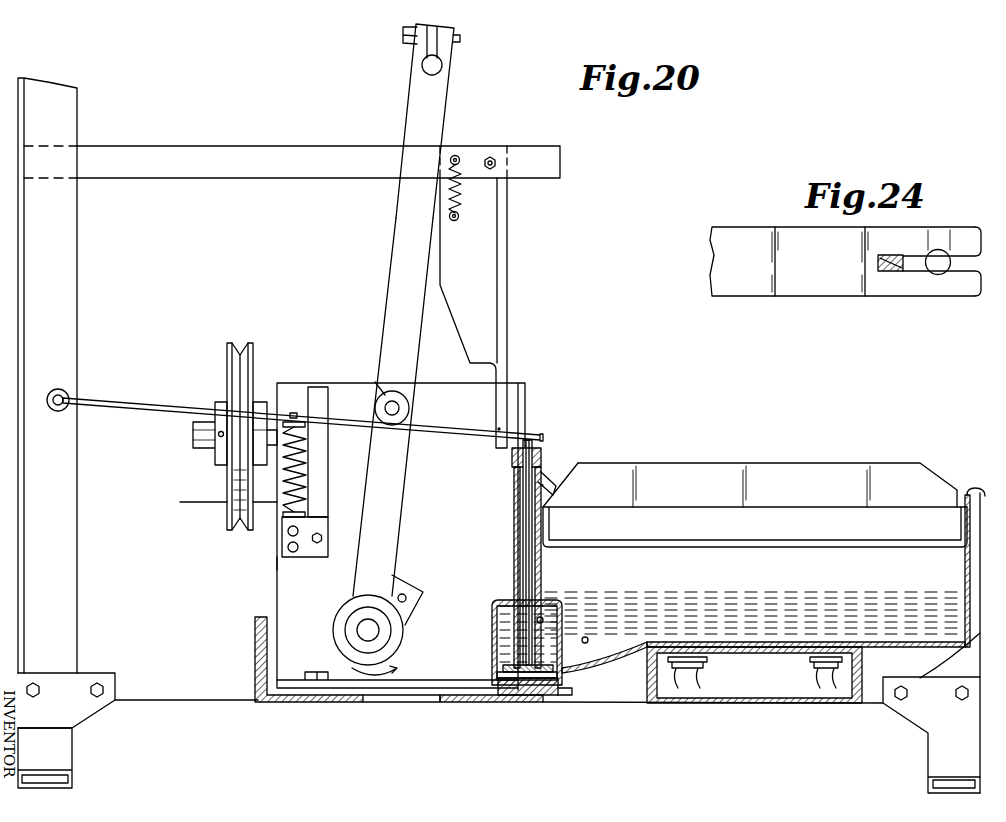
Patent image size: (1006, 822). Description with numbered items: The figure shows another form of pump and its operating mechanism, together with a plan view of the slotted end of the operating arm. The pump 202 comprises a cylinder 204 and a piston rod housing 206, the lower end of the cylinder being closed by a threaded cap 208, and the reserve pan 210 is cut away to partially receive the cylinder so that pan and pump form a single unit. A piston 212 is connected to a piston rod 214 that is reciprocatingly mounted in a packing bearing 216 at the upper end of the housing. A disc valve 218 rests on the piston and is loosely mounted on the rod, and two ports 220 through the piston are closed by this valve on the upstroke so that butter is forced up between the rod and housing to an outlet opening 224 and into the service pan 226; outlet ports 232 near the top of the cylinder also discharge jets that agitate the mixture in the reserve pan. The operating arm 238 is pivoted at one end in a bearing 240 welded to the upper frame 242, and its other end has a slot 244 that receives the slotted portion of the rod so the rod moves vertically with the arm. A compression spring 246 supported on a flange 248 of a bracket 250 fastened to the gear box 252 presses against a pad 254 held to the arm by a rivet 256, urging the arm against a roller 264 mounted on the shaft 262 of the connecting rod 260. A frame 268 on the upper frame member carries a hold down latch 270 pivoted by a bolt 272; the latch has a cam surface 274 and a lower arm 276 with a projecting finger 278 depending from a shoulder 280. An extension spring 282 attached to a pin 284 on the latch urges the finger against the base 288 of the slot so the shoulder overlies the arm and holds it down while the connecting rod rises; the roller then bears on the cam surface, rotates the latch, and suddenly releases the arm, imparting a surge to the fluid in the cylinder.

In FIG. 20, the pump 202 is at (503, 591).
In FIG. 20, the cylinder 204 is at (492, 612).
In FIG. 20, the piston rod housing 206 is at (514, 532).
In FIG. 20, the cap 208 is at (553, 690).
In FIG. 20, the reserve pan 210 is at (912, 645).
In FIG. 20, the piston 212 is at (567, 673).
In FIG. 20, the piston rod 214 is at (536, 434).
In FIG. 24, the piston rod 214 is at (936, 274).
In FIG. 20, the packing bearing 216 is at (547, 458).
In FIG. 20, the disc valve 218 is at (520, 667).
In FIG. 20, the ports 220 is at (497, 674).
In FIG. 20, the outlet opening 224 is at (556, 490).
In FIG. 20, the service pan 226 is at (940, 556).
In FIG. 20, the outlet ports 232 is at (545, 616).
In FIG. 20, the operating arm 238 is at (165, 413).
In FIG. 24, the operating arm 238 is at (752, 290).
In FIG. 20, the bearing 240 is at (57, 388).
In FIG. 20, the upper frame 242 is at (76, 318).
In FIG. 24, the slot 244 is at (890, 258).
In FIG. 20, the compression spring 246 is at (305, 490).
In FIG. 20, the flange 248 is at (312, 523).
In FIG. 20, the bracket 250 is at (323, 476).
In FIG. 20, the gear box 252 is at (278, 565).
In FIG. 20, the pad 254 is at (310, 430).
In FIG. 20, the rivet 256 is at (292, 412).
In FIG. 20, the connecting rod 260 is at (399, 488).
In FIG. 20, the shaft 262 is at (394, 404).
In FIG. 20, the roller 264 is at (375, 382).
In FIG. 20, the frame 268 is at (214, 154).
In FIG. 20, the hold down latch 270 is at (511, 218).
In FIG. 20, the bolt 272 is at (494, 160).
In FIG. 20, the cam surface 274 is at (456, 330).
In FIG. 20, the lower arm 276 is at (510, 372).
In FIG. 20, the projecting finger 278 is at (502, 452).
In FIG. 24, the projecting finger 278 is at (893, 271).
In FIG. 20, the shoulder 280 is at (458, 156).
In FIG. 20, the spring 282 is at (457, 192).
In FIG. 20, the pin 284 is at (458, 220).
In FIG. 24, the base 288 is at (878, 262).